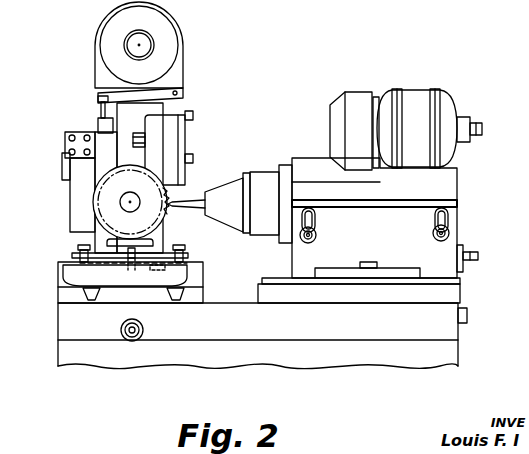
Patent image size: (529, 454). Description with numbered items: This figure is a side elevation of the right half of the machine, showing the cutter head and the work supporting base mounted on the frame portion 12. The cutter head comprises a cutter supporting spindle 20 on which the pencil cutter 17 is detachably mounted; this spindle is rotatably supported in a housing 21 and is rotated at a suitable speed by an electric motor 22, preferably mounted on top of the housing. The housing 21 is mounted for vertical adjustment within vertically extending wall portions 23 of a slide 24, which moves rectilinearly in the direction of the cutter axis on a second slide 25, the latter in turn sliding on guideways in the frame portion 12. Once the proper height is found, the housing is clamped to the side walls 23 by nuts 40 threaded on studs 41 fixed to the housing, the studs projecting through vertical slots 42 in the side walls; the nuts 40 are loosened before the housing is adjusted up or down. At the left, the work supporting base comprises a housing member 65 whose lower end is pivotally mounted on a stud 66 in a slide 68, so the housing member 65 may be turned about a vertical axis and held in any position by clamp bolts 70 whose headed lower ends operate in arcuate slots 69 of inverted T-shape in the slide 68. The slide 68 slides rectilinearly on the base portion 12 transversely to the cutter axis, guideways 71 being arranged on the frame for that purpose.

The frame portion 12 is at (312, 330).
The pencil cutter 17 is at (193, 202).
The cutter supporting spindle 20 is at (230, 193).
The housing 21 is at (305, 167).
The electric motor 22 is at (450, 106).
The vertically extending wall portions 23 is at (453, 223).
The slide 24 is at (453, 280).
The slide 25 is at (443, 295).
The nuts 40 is at (312, 234).
The studs 41 is at (443, 233).
The vertical slots 42 is at (433, 221).
The housing member 65 is at (160, 110).
The stud 66 is at (132, 267).
The slide 68 is at (62, 290).
The arcuate slots 69 is at (157, 267).
The clamp bolts 70 is at (82, 247).
The guideways 71 is at (85, 298).